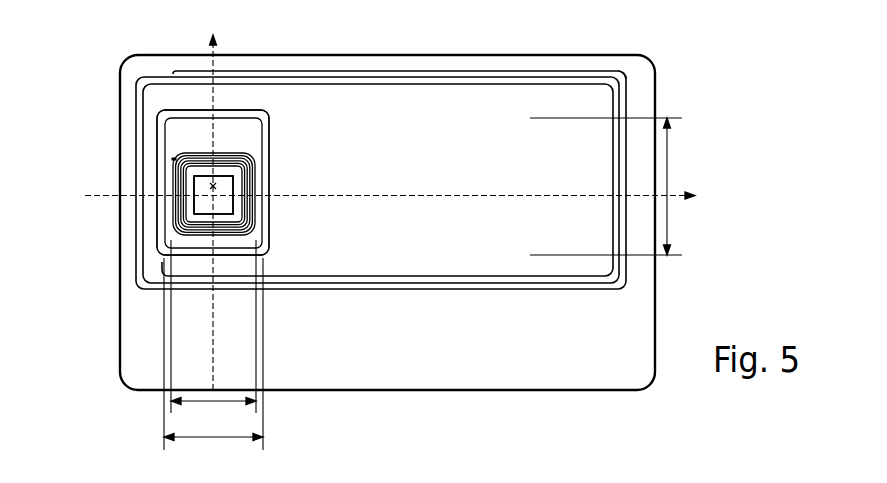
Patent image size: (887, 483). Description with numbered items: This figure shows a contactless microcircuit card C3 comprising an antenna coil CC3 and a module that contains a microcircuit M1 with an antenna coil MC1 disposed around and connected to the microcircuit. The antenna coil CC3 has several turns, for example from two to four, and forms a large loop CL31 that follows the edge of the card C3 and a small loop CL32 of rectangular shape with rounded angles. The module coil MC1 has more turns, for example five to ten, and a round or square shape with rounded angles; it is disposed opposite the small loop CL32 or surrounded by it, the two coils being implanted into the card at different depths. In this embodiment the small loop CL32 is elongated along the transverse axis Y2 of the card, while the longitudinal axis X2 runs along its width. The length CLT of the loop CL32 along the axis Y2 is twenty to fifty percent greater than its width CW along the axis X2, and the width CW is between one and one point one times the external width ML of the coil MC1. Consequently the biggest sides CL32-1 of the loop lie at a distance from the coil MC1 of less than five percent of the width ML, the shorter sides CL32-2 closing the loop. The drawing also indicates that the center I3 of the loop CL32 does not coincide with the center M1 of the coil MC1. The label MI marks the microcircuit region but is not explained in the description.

The contactless microcircuit card C3 is at (121, 62).
The antenna coil CC3 is at (628, 72).
The large loop CL31 is at (140, 287).
The small loop CL32 is at (150, 273).
The biggest sides of the small loop CL32-1 is at (263, 185).
The sides of the small loop CL32-2 is at (229, 117).
The antenna coil of the module MC1 is at (198, 154).
The microcircuit M1 is at (200, 187).
The integrated circuit chip MI is at (210, 196).
The center of the loop I3 is at (212, 185).
The longitudinal axis of the card X2 is at (406, 197).
The transverse axis of the card Y2 is at (214, 200).
The length of the loop CLT is at (622, 186).
The external width of the coil ML is at (213, 334).
The width of the loop CW is at (213, 359).